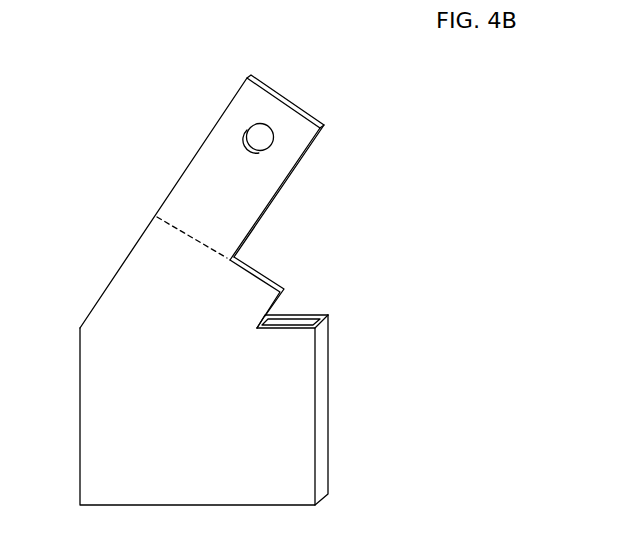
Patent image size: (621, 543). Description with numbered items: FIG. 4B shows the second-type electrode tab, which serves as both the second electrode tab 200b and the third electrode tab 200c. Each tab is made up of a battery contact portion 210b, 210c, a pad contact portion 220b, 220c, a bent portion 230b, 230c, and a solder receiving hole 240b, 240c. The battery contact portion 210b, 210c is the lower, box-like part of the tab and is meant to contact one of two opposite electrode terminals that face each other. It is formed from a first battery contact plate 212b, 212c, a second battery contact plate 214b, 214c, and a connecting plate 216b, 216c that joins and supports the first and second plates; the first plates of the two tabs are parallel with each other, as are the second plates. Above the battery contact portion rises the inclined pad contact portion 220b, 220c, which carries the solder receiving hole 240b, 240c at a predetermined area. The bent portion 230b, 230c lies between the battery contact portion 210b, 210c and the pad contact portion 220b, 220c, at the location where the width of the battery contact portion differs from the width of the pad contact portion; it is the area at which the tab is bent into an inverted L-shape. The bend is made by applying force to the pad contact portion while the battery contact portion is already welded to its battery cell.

The second electrode tab 200b is at (126, 181).
The third electrode tab 200c is at (327, 290).
The battery contact portion 210b is at (468, 305).
The battery contact portion 210c is at (271, 399).
The first battery contact plate 212b is at (297, 328).
The first battery contact plate 212c is at (197, 416).
The second battery contact plate 214b is at (305, 316).
The second battery contact plate 214c is at (292, 321).
The connecting plate 216b is at (323, 334).
The connecting plate 216c is at (321, 410).
The pad contact portion 220b is at (256, 194).
The pad contact portion 220c is at (253, 201).
The bent portion 230b is at (212, 248).
The bent portion 230c is at (220, 272).
The solder receiving hole 240b is at (272, 140).
The solder receiving hole 240c is at (258, 139).